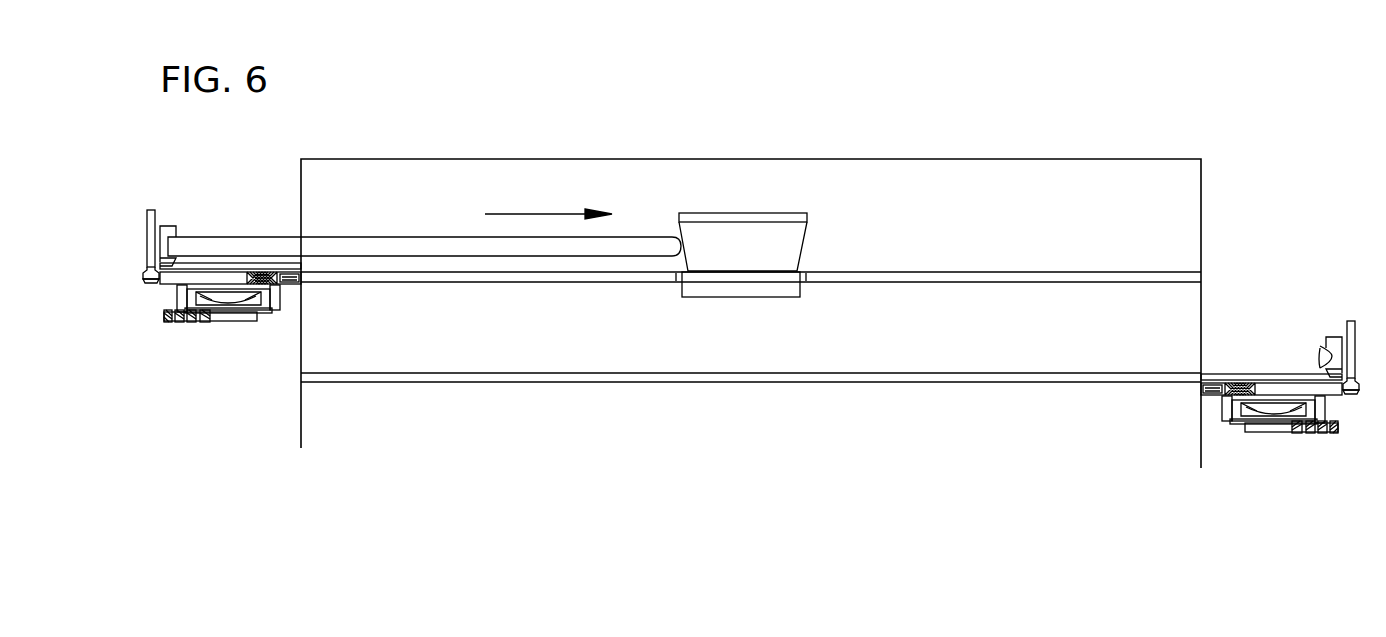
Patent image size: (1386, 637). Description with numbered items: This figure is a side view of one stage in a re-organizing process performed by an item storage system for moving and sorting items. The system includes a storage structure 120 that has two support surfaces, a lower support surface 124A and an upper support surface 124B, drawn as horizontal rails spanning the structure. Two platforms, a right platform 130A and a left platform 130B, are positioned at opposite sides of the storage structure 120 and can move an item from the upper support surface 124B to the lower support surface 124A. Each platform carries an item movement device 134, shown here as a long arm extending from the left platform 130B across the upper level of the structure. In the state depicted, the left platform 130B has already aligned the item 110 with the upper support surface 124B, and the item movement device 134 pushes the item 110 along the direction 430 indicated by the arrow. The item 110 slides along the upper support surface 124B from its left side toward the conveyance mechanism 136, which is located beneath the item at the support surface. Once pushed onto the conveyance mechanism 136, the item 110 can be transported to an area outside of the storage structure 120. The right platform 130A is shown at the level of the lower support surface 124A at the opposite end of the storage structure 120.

The item 110 is at (763, 254).
The storage structure 120 is at (1203, 221).
The lower support surface 124A is at (1158, 373).
The upper support surface 124B is at (1160, 272).
The right platform 130A is at (1284, 430).
The left platform 130B is at (216, 316).
The item movement device 134 is at (322, 247).
The conveyance mechanism 136 is at (800, 290).
The direction 430 is at (548, 213).